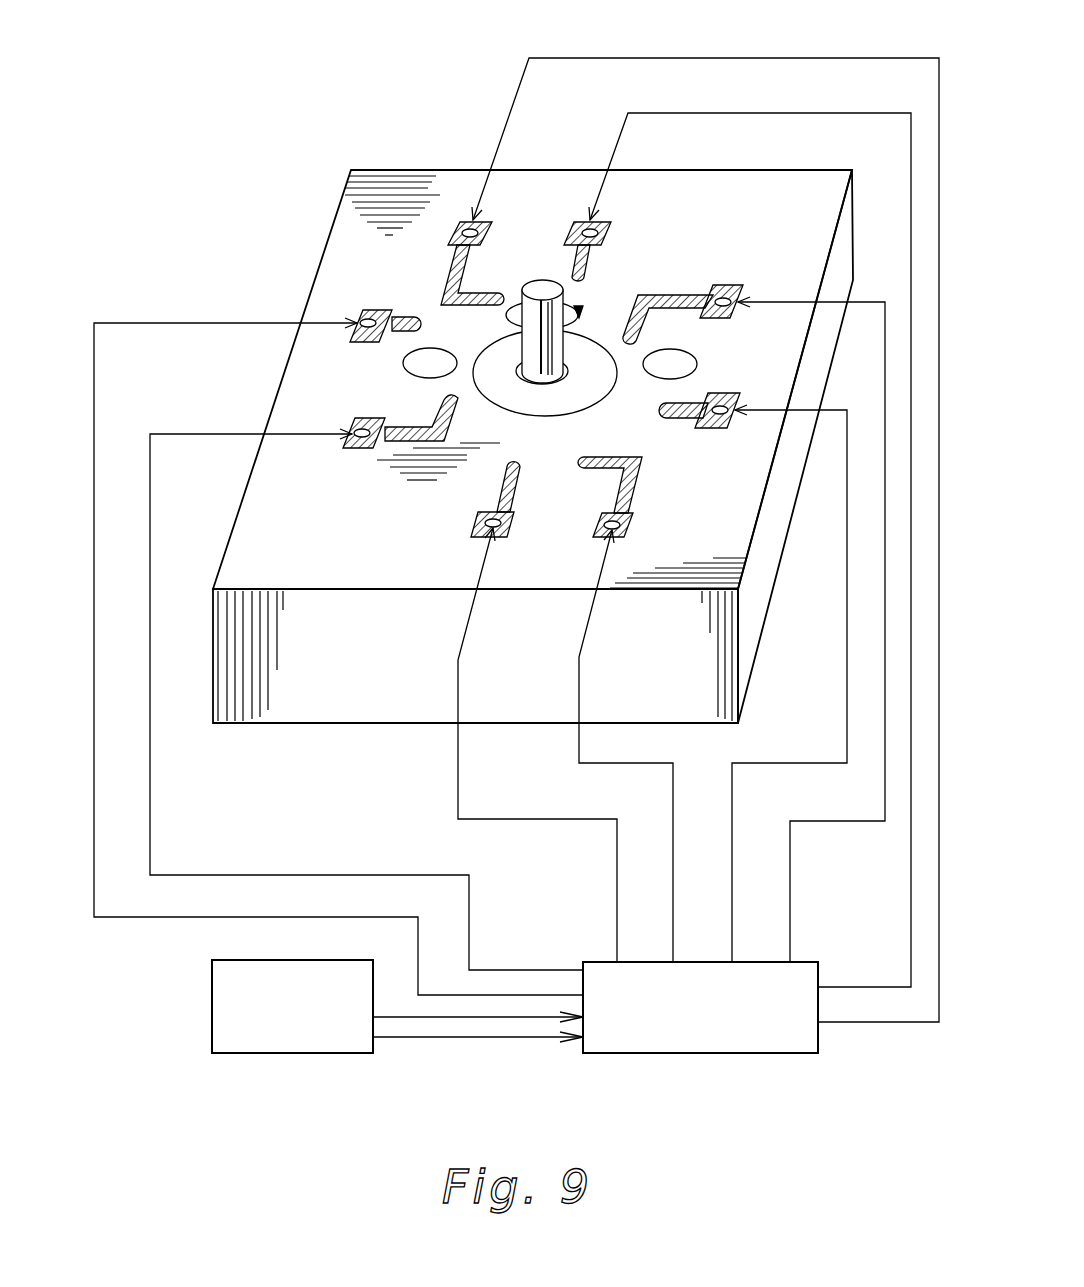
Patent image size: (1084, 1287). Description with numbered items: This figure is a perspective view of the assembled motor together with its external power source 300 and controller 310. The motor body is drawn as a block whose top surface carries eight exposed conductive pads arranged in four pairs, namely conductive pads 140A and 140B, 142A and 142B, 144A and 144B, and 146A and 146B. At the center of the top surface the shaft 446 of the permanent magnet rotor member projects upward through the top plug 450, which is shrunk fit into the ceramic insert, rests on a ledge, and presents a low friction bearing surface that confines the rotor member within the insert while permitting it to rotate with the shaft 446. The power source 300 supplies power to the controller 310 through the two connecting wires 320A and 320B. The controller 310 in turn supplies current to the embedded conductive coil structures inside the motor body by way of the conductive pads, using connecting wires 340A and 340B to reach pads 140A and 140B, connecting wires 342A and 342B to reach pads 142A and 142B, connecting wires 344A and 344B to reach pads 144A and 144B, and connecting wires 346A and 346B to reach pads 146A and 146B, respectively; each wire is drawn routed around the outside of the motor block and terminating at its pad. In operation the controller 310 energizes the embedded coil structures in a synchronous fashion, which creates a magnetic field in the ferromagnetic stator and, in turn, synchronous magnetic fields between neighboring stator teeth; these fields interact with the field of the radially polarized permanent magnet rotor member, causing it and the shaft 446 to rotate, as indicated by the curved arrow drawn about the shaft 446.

The conductive pad 140A is at (470, 520).
The conductive pad 140B is at (632, 518).
The conductive pad 142A is at (726, 393).
The conductive pad 142B is at (735, 285).
The conductive pad 144A is at (610, 222).
The conductive pad 144B is at (456, 222).
The conductive pad 146A is at (365, 310).
The conductive pad 146B is at (357, 459).
The power source 300 is at (212, 986).
The controller 310 is at (748, 1054).
The connecting wire 320A is at (427, 1018).
The connecting wire 320B is at (521, 1038).
The connecting wire 340A is at (458, 644).
The connecting wire 340B is at (580, 666).
The connecting wire 342A is at (815, 763).
The connecting wire 342B is at (860, 821).
The connecting wire 344A is at (728, 113).
The connecting wire 344B is at (795, 58).
The connecting wire 346A is at (203, 323).
The connecting wire 346B is at (218, 434).
The shaft 446 is at (542, 285).
The top plug 450 is at (490, 348).